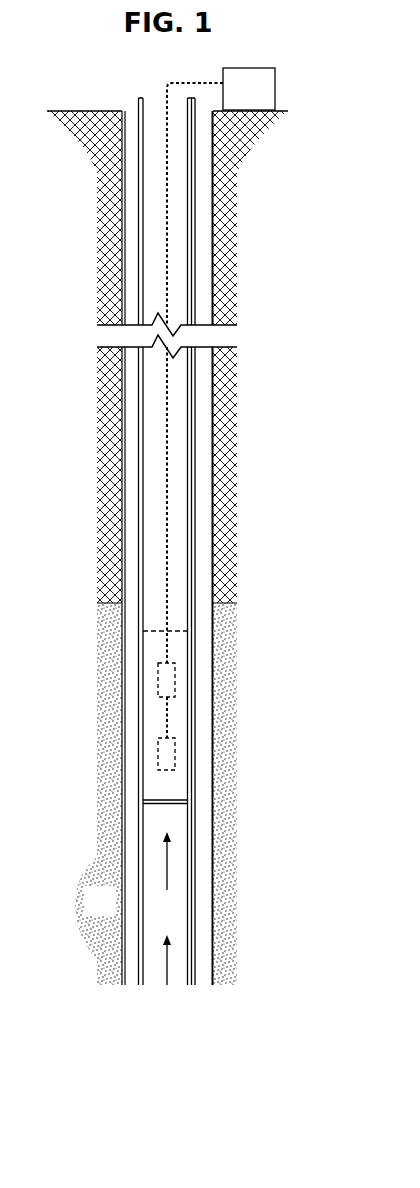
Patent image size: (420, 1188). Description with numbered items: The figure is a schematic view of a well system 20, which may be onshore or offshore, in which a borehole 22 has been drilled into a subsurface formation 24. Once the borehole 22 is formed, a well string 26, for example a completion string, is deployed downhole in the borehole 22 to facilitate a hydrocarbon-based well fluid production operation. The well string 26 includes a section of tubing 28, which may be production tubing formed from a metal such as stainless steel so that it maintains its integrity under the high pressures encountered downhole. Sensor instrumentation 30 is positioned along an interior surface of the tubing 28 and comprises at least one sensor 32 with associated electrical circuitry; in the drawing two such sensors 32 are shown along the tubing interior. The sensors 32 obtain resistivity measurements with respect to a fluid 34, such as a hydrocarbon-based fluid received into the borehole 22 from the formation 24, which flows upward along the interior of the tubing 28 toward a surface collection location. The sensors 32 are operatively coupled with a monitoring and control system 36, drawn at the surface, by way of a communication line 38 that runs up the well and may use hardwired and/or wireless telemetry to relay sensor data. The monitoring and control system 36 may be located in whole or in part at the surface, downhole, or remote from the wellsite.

The well system 20 is at (128, 85).
The borehole 22 is at (131, 241).
The subsurface formation 24 is at (112, 913).
The well string 26 is at (135, 431).
The tubing 28 is at (138, 692).
The sensor instrumentation 30 is at (150, 751).
The sensor 32 is at (170, 680).
The fluid 34 is at (167, 868).
The monitoring and control system 36 is at (262, 103).
The communication line 38 is at (168, 522).